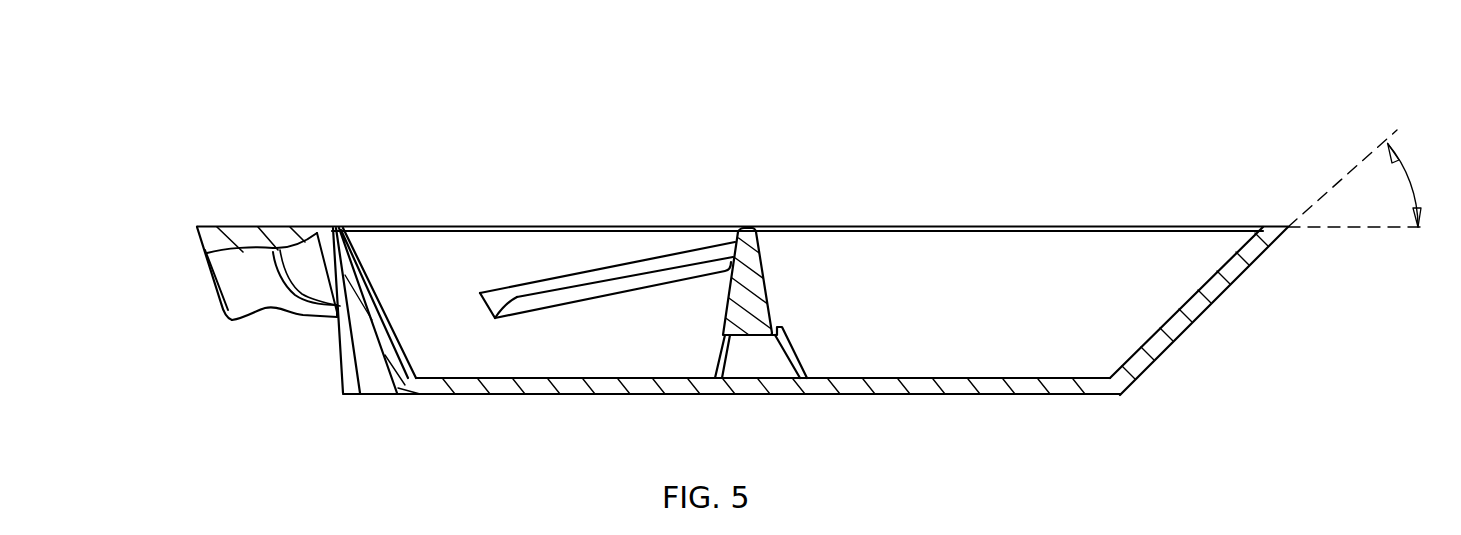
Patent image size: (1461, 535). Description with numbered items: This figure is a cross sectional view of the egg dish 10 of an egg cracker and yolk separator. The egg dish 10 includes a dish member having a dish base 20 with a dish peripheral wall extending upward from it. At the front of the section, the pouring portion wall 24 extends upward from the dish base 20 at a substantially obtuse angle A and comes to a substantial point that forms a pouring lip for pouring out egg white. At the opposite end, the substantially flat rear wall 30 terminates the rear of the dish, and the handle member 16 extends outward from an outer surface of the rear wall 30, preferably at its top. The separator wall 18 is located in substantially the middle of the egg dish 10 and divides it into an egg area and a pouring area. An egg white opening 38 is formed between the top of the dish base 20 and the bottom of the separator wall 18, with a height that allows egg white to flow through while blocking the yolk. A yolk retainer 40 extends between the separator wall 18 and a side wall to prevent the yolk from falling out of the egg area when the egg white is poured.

The egg dish 10 is at (903, 93).
The handle member 16 is at (215, 240).
The separator wall 18 is at (755, 282).
The dish base 20 is at (937, 395).
The pouring portion wall 24 is at (1165, 320).
The substantially flat rear wall 30 is at (375, 332).
The egg white opening 38 is at (762, 365).
The yolk retainer 40 is at (577, 278).